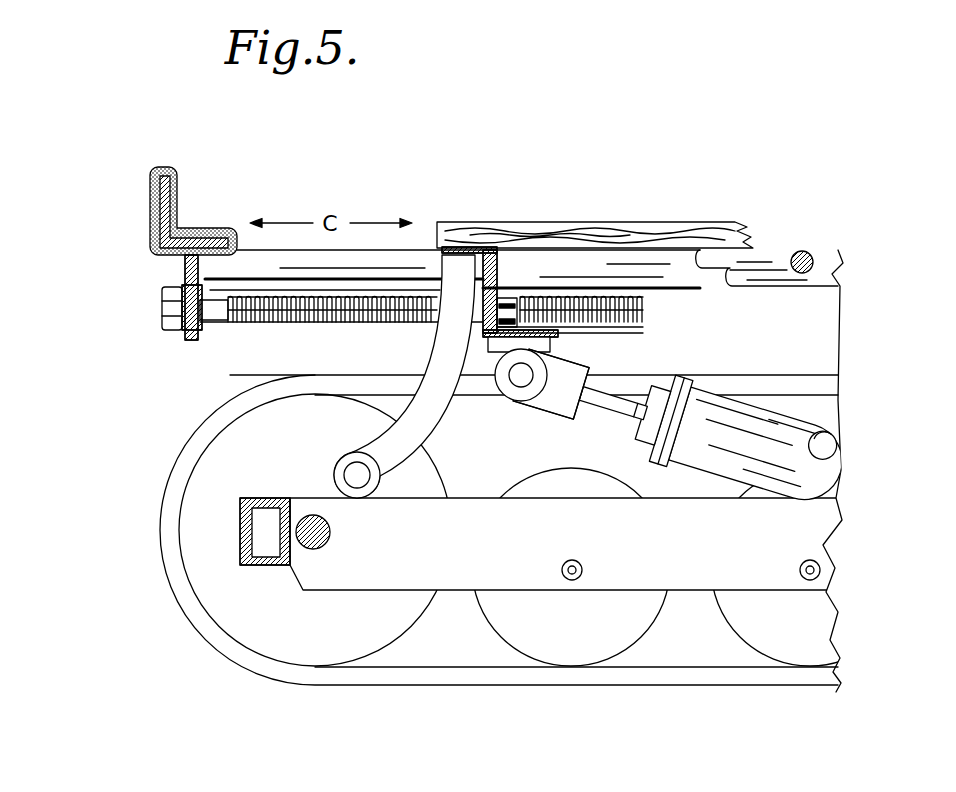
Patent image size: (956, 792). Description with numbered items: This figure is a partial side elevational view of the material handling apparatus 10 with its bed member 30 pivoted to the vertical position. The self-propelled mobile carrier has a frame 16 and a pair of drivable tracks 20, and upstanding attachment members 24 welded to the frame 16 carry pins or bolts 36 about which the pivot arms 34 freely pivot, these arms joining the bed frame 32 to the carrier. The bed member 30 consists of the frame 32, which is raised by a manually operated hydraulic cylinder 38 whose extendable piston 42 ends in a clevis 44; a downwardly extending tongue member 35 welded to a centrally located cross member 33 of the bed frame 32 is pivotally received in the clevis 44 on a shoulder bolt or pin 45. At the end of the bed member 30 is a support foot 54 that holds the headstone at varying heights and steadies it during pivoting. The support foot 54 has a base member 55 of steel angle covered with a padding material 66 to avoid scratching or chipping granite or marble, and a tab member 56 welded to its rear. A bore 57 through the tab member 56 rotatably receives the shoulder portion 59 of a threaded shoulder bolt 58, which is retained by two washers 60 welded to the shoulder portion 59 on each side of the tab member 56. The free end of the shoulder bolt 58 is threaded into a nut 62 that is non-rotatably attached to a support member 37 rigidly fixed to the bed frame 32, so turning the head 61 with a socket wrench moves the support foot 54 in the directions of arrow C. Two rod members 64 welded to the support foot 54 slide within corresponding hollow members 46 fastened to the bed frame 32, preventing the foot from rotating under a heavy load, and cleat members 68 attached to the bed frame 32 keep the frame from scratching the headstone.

The material handling apparatus 10 is at (205, 672).
The frame 16 is at (513, 558).
The drivable tracks 20 is at (177, 478).
The upstanding attachment members 24 is at (330, 483).
The bed member 30 is at (468, 215).
The frame 32 is at (822, 283).
The cross member 33 is at (557, 334).
The pivot arms 34 is at (390, 428).
The tongue member 35 is at (548, 350).
The pins or bolts 36 is at (353, 477).
The support member 37 is at (506, 290).
The hydraulic cylinder 38 is at (743, 460).
The extendable piston 42 is at (600, 412).
The clevis 44 is at (558, 405).
The shoulder bolt or pin 45 is at (513, 382).
The hollow members 46 is at (623, 262).
The support foot 54 is at (185, 195).
The base member 55 is at (165, 167).
The tab member 56 is at (153, 257).
The bore 57 is at (162, 317).
The shoulder bolt 58 is at (377, 313).
The shoulder portion 59 is at (218, 313).
The washers 60 is at (180, 283).
The head 61 is at (163, 307).
The nut 62 is at (512, 300).
The rod members 64 is at (408, 263).
The padding material 66 is at (150, 205).
The cleat members 68 is at (710, 225).